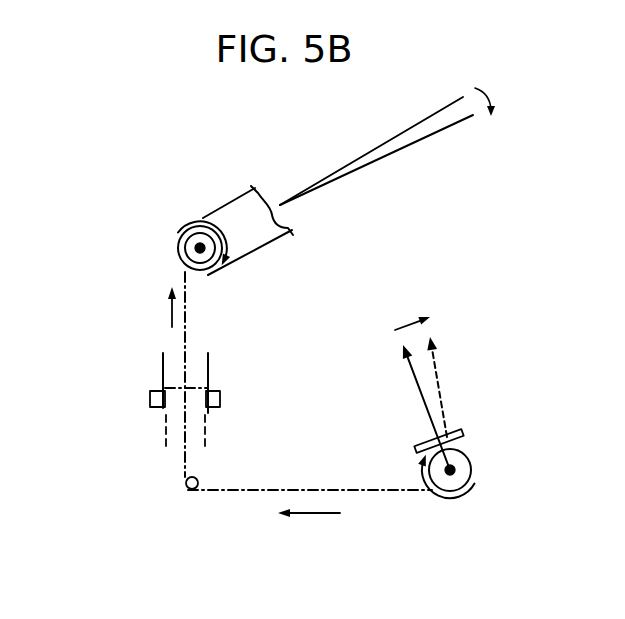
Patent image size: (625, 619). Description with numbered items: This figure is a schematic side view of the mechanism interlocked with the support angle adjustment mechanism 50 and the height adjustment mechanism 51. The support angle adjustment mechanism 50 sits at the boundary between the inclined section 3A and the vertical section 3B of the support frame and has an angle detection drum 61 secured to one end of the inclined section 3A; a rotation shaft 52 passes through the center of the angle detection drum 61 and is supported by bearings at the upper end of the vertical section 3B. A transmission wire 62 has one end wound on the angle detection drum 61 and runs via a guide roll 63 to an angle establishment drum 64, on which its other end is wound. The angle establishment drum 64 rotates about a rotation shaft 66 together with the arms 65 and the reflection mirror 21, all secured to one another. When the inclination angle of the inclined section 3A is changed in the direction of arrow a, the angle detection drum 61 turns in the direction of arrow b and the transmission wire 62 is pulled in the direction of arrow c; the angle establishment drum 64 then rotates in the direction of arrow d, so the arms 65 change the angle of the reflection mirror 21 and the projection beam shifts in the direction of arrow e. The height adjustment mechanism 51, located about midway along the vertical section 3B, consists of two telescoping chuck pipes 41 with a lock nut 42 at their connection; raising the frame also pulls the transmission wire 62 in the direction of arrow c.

The support angle adjustment mechanism 50 is at (155, 228).
The angle detection drum 61 is at (183, 217).
The rotation shaft 52 is at (180, 252).
The inclined section 3A is at (222, 215).
The arrow a is at (483, 92).
The arrow b is at (228, 242).
The arrow c is at (178, 302).
The transmission wire 62 is at (187, 300).
The guide roll 63 is at (186, 490).
The vertical section 3B is at (161, 353).
The chuck pipes 41 is at (207, 377).
The height adjustment mechanism 51 is at (147, 392).
The lock nut 42 is at (219, 402).
The arrow e is at (402, 323).
The reflection mirror 21 is at (458, 430).
The arms 65 is at (470, 433).
The rotation shaft 66 is at (468, 453).
The angle establishment drum 64 is at (470, 493).
The arrow d is at (435, 490).